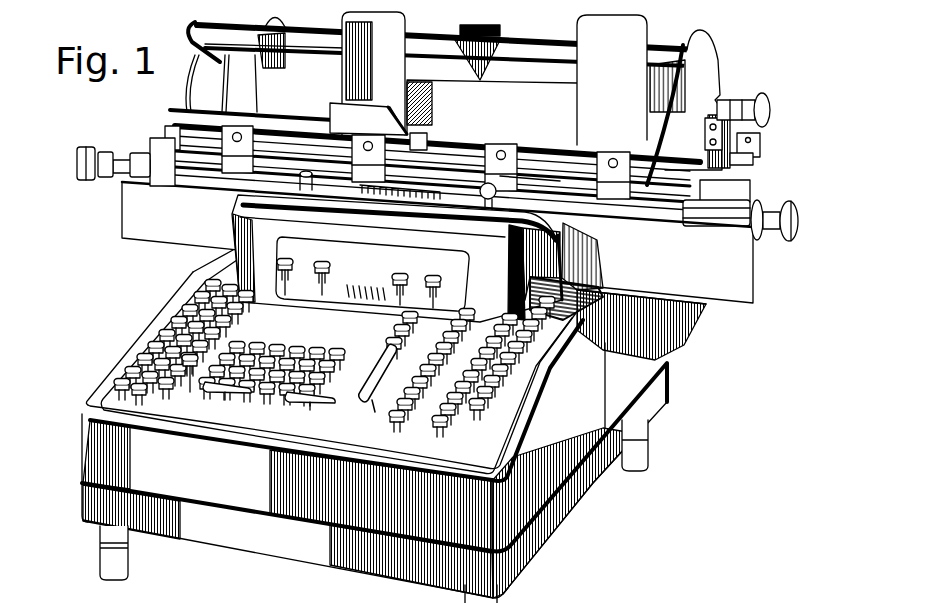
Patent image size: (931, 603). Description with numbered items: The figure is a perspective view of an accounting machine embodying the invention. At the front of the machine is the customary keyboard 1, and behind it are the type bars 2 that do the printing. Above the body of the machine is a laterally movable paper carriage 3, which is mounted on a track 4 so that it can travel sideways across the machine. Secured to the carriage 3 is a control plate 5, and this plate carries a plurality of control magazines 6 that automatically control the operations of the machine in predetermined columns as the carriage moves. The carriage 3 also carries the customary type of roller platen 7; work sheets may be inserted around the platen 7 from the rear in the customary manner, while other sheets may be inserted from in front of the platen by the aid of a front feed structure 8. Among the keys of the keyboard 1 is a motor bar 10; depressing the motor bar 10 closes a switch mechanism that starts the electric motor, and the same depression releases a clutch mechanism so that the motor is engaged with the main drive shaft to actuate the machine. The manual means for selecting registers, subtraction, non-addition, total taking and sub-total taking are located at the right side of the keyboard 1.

The keyboard 1 is at (247, 410).
The type bars 2 is at (423, 197).
The paper carriage 3 is at (717, 80).
The track 4 is at (751, 197).
The control plate 5 is at (753, 157).
The control magazines 6 is at (753, 145).
The roller platen 7 is at (530, 190).
The front feed structure 8 is at (167, 128).
The motor bar 10 is at (378, 405).